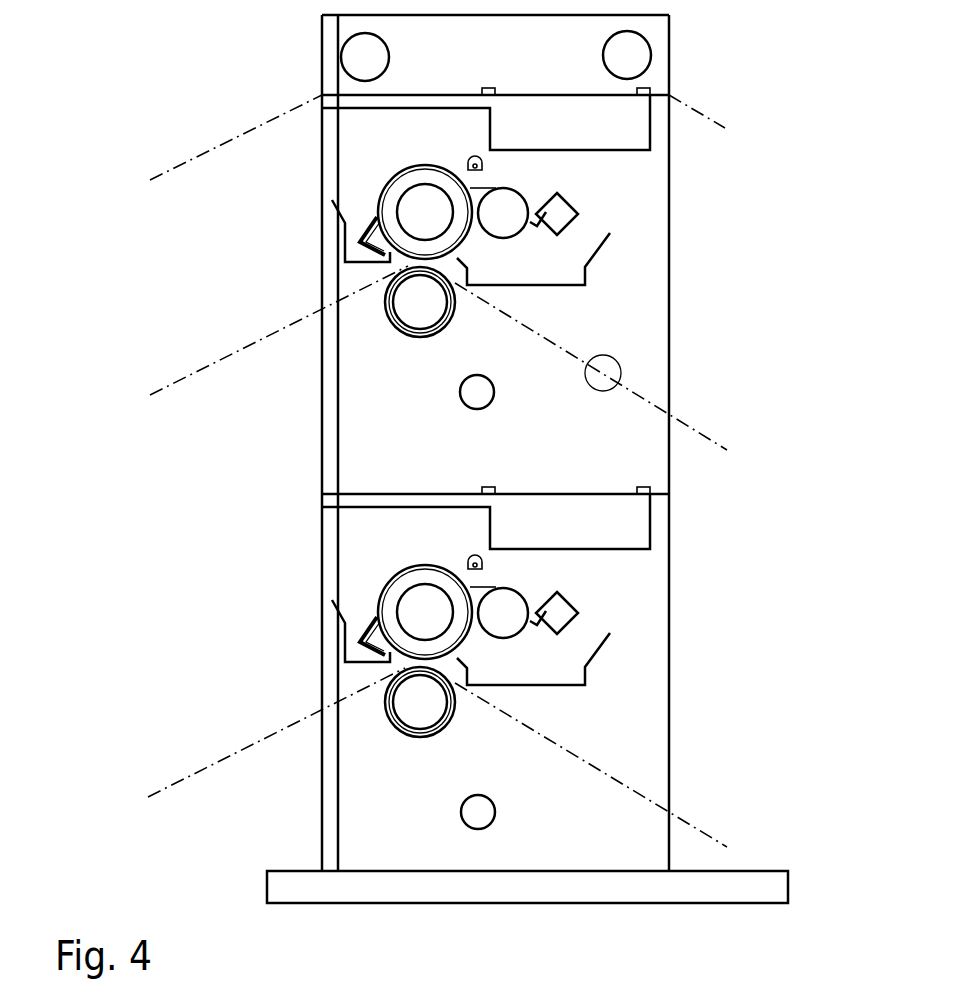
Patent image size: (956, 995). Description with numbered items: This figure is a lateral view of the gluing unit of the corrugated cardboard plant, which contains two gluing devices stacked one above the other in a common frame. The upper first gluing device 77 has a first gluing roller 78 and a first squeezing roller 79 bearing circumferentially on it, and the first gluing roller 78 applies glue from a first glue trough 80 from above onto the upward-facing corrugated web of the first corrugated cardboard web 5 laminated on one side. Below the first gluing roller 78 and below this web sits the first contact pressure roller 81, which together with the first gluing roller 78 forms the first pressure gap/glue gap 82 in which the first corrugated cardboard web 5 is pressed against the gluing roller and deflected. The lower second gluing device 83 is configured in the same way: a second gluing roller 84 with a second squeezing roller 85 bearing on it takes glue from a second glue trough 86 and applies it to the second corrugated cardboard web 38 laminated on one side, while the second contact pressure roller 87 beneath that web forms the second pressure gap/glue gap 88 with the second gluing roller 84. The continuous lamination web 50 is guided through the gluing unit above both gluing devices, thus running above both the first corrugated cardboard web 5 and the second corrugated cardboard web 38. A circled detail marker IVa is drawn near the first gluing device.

The first corrugated cardboard web laminated on one side 5 is at (237, 355).
The second corrugated cardboard web laminated on one side 38 is at (307, 720).
The continuous lamination web 50 is at (690, 107).
The first gluing device 77 is at (676, 243).
The first gluing roller 78 is at (415, 207).
The first squeezing roller 79 is at (507, 200).
The first glue trough 80 is at (587, 277).
The first contact pressure roller 81 is at (415, 302).
The first pressure gap/glue gap 82 is at (392, 262).
The second gluing device 83 is at (562, 568).
The second gluing roller 84 is at (262, 600).
The second squeezing roller 85 is at (640, 589).
The second glue trough 86 is at (630, 677).
The second contact pressure roller 87 is at (254, 692).
The second pressure gap/glue gap 88 is at (222, 631).
The detail view marker IVa is at (620, 363).